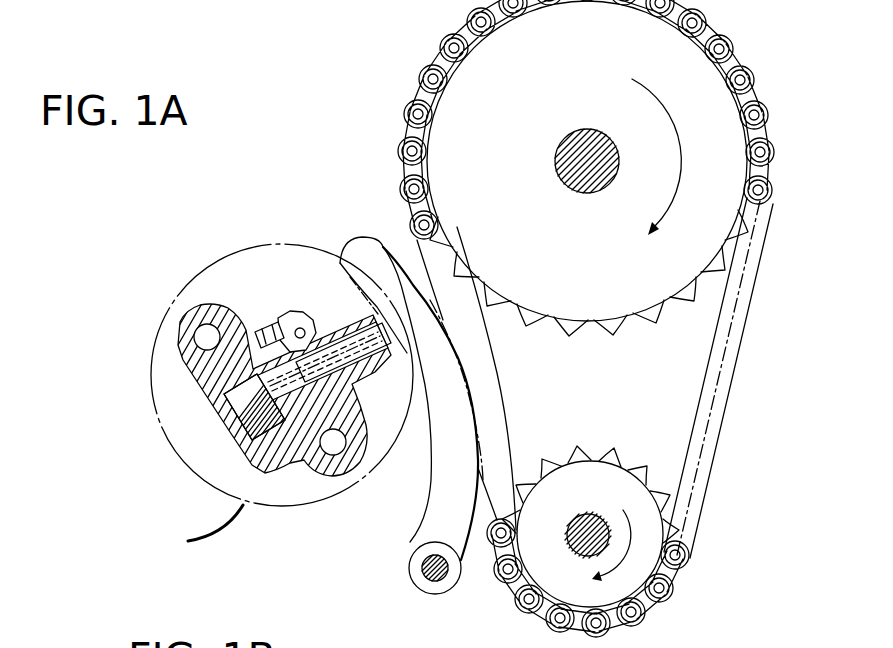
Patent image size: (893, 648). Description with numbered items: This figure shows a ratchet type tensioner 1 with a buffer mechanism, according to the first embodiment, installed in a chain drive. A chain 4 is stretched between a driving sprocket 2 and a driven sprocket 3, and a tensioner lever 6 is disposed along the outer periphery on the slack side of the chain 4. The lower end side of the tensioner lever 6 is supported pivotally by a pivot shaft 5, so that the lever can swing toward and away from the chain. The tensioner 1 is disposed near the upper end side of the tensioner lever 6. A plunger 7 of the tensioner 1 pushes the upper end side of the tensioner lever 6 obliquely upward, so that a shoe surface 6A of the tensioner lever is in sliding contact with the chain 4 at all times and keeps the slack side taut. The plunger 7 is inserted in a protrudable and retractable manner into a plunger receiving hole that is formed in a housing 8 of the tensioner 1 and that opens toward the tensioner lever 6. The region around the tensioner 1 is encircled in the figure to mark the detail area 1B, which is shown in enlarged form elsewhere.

The tensioner 1 is at (287, 401).
The enlarged detail region (FIG. 1B) 1B is at (280, 401).
The driving sprocket 2 is at (647, 560).
The driven sprocket 3 is at (713, 112).
The chain 4 is at (753, 73).
The pivot shaft 5 is at (437, 572).
The tensioner lever 6 is at (455, 372).
The shoe surface 6A is at (467, 373).
The plunger 7 is at (379, 390).
The housing 8 is at (200, 368).